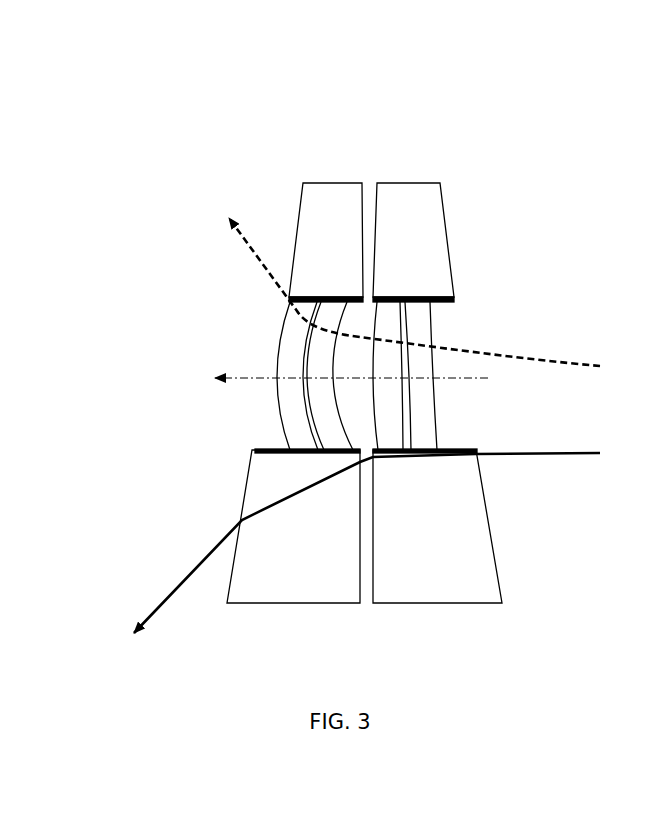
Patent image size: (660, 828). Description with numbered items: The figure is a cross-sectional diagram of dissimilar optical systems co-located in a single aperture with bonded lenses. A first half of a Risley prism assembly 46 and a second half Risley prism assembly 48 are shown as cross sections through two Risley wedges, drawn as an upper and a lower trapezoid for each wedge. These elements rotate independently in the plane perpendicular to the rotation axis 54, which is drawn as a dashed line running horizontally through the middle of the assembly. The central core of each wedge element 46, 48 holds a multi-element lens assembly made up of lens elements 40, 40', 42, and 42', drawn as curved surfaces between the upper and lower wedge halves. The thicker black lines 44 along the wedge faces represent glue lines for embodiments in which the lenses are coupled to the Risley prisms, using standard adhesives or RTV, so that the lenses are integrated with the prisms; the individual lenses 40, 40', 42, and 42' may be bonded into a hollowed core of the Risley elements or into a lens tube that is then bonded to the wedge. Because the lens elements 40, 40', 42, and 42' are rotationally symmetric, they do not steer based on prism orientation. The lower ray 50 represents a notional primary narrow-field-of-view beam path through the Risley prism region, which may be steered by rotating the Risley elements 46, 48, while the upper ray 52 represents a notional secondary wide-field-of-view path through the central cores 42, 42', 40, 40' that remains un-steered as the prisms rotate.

The lens element 40 is at (239, 354).
The lens element 40' is at (230, 376).
The lens element 42 is at (459, 376).
The lens element 42' is at (478, 352).
The glue lines 44 is at (249, 453).
The first half of a Risley prism assembly 46 is at (337, 182).
The second half Risley prism assembly 48 is at (400, 182).
The lower ray 50 is at (389, 540).
The upper ray 52 is at (436, 298).
The rotation axis 54 is at (211, 378).